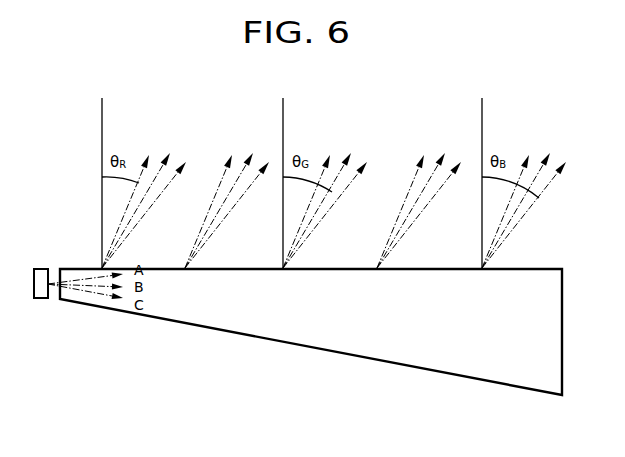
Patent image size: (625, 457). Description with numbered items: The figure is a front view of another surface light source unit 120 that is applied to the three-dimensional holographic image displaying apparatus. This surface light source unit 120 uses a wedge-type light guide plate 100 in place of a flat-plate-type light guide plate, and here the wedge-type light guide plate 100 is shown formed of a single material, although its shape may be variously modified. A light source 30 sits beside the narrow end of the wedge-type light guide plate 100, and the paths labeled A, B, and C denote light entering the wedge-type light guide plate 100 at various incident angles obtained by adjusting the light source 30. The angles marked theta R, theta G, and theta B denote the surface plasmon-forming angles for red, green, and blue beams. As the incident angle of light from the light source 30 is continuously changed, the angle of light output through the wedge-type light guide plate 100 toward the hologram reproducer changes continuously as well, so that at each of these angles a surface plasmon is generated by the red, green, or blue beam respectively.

The light source 30 is at (40, 303).
The wedge-type light guide plate 100 is at (311, 332).
The surface light source unit 120 is at (295, 339).